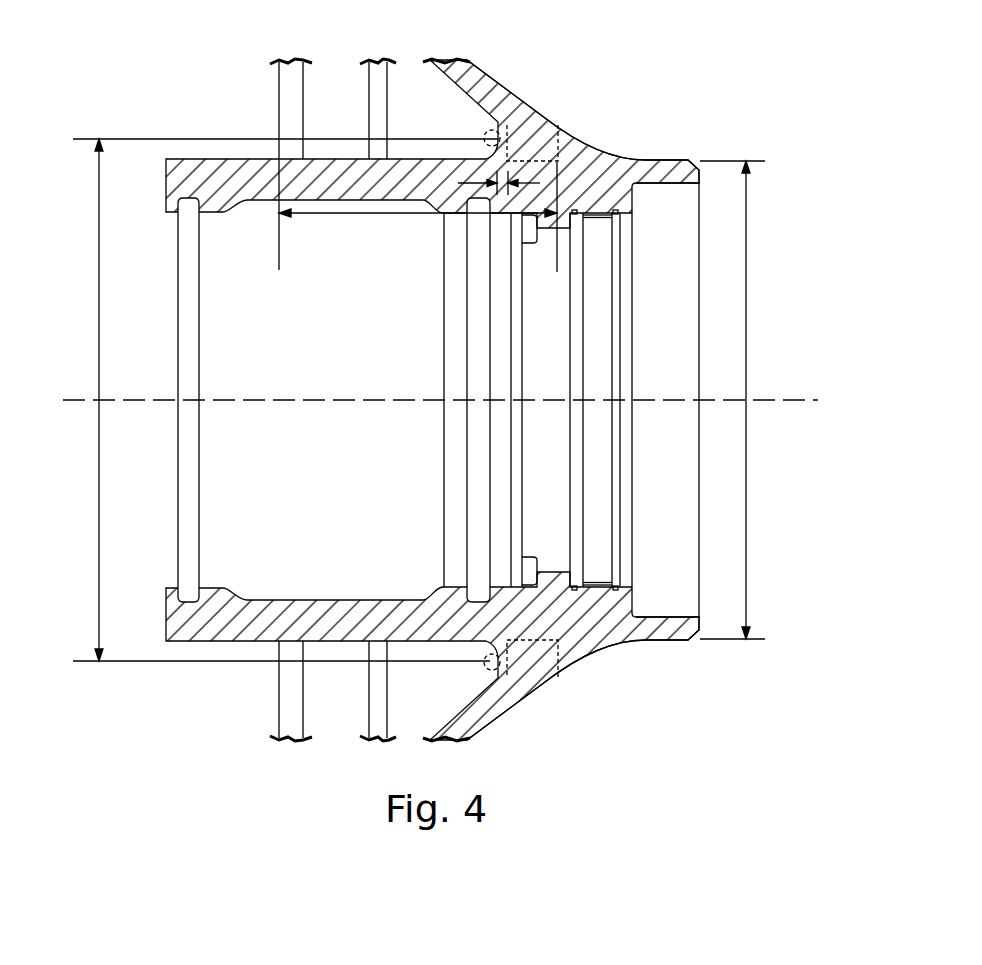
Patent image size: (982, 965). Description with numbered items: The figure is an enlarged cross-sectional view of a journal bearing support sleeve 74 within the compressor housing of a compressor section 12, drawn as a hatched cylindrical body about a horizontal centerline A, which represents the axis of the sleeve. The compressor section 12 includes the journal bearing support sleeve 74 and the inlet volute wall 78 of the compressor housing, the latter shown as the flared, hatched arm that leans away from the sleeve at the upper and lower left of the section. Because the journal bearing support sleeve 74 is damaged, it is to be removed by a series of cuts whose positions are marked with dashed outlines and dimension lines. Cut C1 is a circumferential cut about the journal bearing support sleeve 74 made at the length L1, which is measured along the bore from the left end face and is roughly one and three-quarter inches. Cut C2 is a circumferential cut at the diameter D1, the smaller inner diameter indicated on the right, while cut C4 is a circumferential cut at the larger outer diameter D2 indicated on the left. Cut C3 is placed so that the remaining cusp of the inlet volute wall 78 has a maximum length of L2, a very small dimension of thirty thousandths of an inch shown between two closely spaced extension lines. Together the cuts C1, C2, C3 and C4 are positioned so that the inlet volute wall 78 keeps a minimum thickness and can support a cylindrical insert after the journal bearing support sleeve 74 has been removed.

The compressor section 12 is at (429, 382).
The journal bearing support sleeve 74 is at (673, 170).
The inlet volute wall 78 is at (527, 150).
The cut C1 is at (560, 123).
The cut C2 is at (522, 140).
The cut C3 is at (513, 155).
The cut C4 is at (483, 134).
The diameter D1 is at (747, 377).
The diameter D2 is at (99, 373).
The length L1 is at (333, 225).
The length L2 is at (545, 178).
The central axis A is at (787, 401).